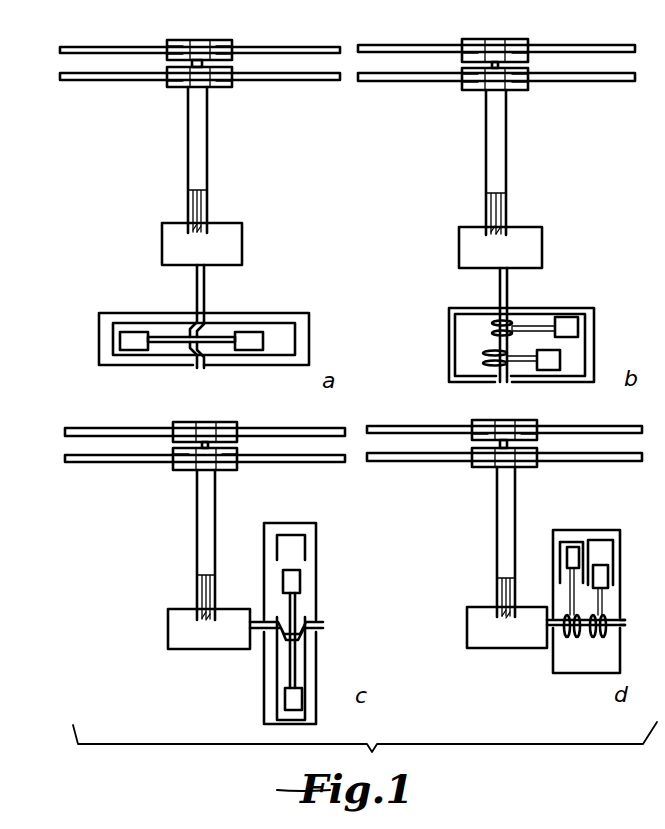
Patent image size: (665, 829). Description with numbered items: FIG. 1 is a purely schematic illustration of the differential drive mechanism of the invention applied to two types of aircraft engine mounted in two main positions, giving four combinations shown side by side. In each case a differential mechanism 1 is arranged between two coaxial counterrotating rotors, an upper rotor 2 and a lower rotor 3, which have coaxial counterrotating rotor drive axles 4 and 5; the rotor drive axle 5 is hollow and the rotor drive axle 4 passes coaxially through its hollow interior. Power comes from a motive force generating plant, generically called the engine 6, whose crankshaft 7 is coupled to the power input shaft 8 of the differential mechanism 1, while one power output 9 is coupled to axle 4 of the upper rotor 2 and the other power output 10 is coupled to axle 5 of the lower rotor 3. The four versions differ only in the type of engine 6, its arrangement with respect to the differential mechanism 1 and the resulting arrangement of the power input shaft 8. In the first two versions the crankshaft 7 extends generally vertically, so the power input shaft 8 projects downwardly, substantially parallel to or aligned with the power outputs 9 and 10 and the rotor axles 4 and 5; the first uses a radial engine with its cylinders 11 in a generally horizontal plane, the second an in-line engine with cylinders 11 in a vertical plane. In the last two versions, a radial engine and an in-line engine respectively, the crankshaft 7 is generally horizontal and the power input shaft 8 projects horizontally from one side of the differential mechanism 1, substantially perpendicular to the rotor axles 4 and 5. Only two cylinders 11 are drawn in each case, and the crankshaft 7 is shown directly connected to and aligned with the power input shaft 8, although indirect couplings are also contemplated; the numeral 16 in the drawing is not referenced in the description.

The differential mechanism 1 is at (243, 252).
The upper rotor 2 is at (103, 53).
The lower rotor 3 is at (113, 80).
The rotor drive axle 4 is at (190, 67).
The rotor drive axle 5 is at (190, 140).
The engine 6 is at (275, 302).
The crankshaft 7 is at (190, 330).
The power input shaft 8 is at (197, 270).
The power output 9 is at (195, 250).
The power output 10 is at (190, 230).
The cylinders 11 is at (135, 347).
The shaft end 16 is at (628, 612).